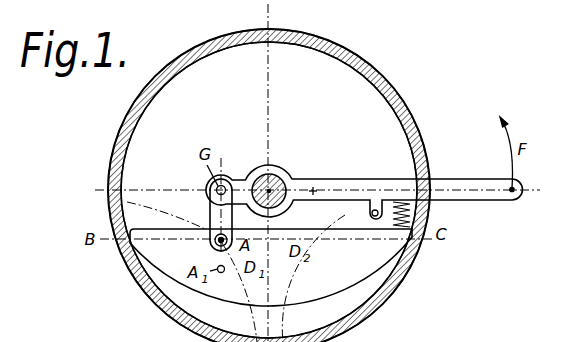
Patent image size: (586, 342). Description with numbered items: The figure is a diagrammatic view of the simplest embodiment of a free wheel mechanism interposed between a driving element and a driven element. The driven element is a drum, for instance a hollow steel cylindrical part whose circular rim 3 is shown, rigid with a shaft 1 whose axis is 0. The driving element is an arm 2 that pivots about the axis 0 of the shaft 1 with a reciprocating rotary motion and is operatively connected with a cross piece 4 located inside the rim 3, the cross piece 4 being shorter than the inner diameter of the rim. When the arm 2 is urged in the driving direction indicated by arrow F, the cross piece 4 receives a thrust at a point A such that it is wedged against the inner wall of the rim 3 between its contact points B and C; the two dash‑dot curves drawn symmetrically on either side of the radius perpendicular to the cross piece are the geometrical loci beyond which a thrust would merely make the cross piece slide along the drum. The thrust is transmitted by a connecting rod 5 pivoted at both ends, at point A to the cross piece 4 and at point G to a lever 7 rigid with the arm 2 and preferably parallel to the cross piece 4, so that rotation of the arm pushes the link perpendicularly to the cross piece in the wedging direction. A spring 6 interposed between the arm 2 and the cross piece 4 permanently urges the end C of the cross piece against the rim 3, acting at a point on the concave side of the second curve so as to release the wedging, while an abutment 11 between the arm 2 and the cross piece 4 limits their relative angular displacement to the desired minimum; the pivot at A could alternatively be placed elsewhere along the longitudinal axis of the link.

The axis 0 is at (285, 176).
The shaft 1 is at (271, 186).
The arm 2 is at (476, 191).
The rim 3 is at (364, 80).
The cross piece 4 is at (300, 277).
The connecting rod 5 is at (217, 208).
The spring 6 is at (412, 214).
The lever 7 is at (229, 180).
The abutment 11 is at (372, 213).